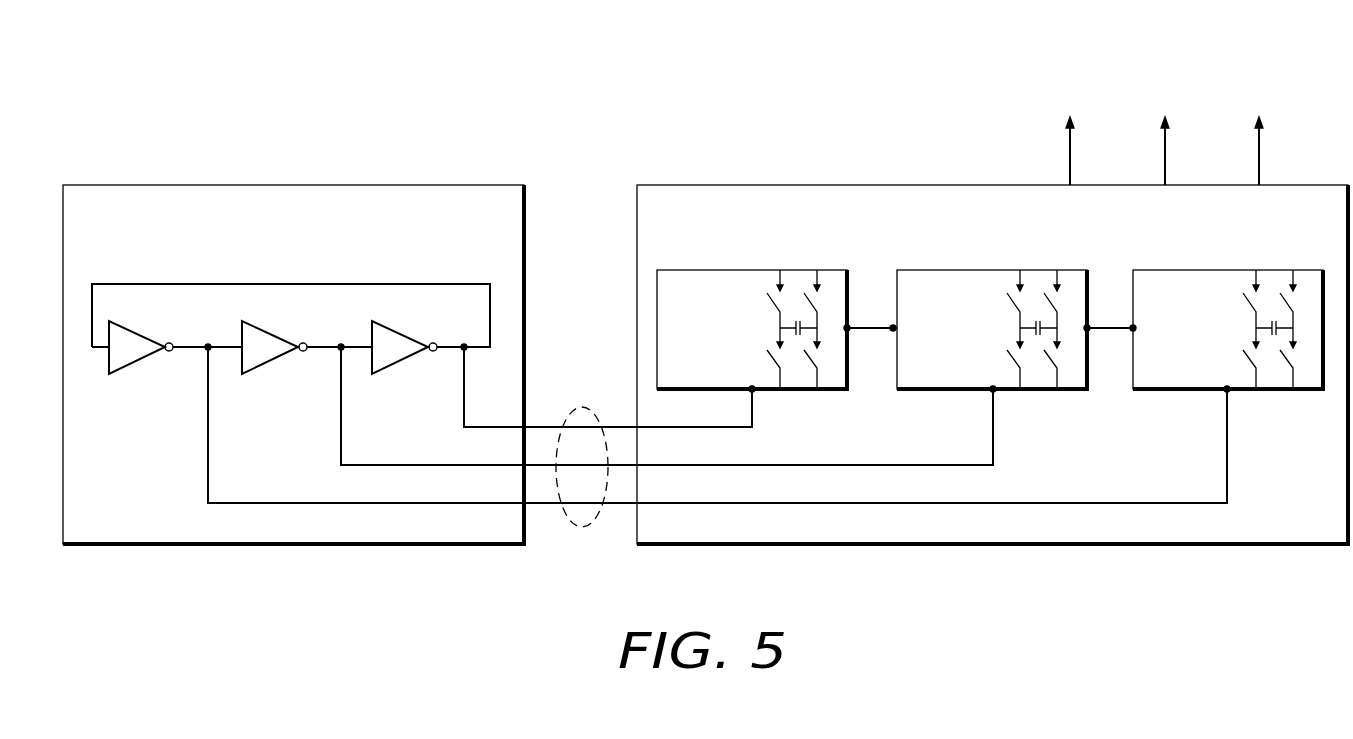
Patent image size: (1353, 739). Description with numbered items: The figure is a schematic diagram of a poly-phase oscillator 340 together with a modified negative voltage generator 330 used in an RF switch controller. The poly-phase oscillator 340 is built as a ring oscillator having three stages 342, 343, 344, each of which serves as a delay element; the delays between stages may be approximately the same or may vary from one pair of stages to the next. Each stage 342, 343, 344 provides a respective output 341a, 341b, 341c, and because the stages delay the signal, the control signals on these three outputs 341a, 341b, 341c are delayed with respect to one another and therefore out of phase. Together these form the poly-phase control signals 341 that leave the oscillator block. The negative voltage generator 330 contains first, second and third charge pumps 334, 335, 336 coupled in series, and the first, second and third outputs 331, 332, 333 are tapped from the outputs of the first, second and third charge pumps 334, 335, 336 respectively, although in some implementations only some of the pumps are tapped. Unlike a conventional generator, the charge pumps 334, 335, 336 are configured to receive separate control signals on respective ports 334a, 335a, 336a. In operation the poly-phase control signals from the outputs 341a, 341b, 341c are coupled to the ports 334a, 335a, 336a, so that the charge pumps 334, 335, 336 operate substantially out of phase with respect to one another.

The modified negative voltage generator 330 is at (895, 185).
The first output 331 is at (1068, 185).
The second output 332 is at (1163, 185).
The third output 333 is at (1262, 185).
The first charge pump 334 is at (763, 270).
The port of first charge pump 334a is at (755, 393).
The second charge pump 335 is at (1003, 270).
The port of second charge pump 335a is at (996, 393).
The third charge pump 336 is at (1235, 270).
The port of third charge pump 336a is at (1230, 393).
The poly-phase oscillator 340 is at (438, 185).
The poly-phase control signals 341 is at (588, 528).
The first output 341a is at (208, 448).
The second output 341b is at (341, 443).
The third output 341c is at (464, 420).
The first stage 342 is at (131, 363).
The second stage 343 is at (264, 363).
The third stage 344 is at (397, 362).